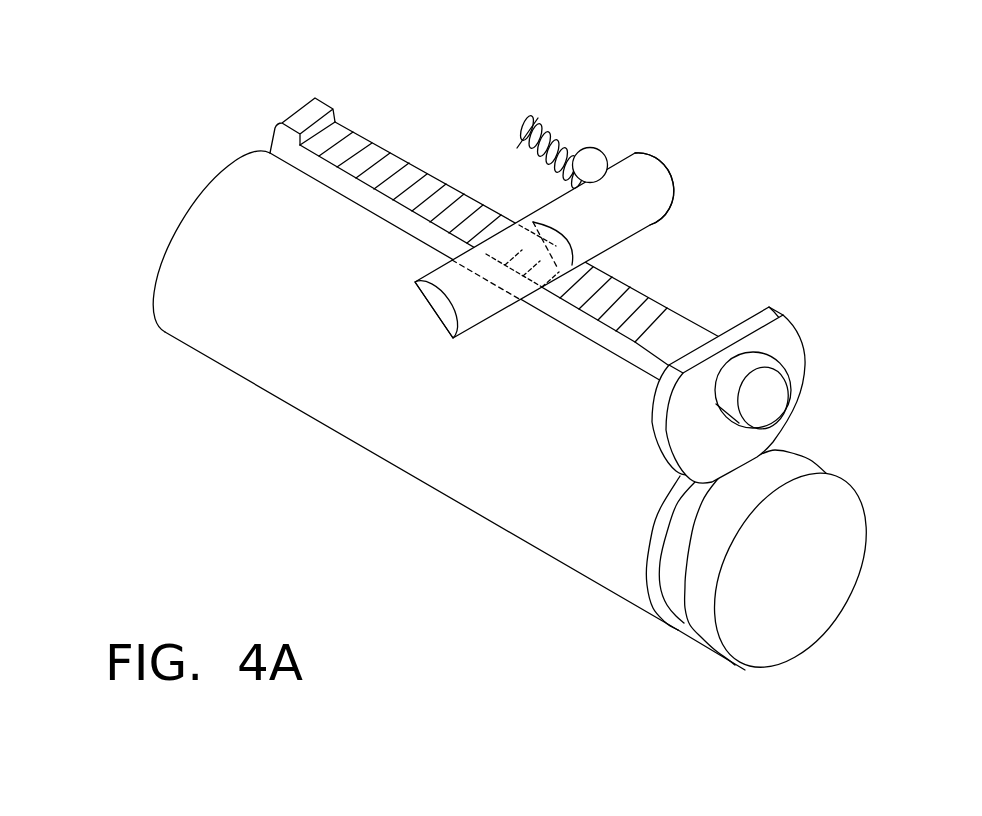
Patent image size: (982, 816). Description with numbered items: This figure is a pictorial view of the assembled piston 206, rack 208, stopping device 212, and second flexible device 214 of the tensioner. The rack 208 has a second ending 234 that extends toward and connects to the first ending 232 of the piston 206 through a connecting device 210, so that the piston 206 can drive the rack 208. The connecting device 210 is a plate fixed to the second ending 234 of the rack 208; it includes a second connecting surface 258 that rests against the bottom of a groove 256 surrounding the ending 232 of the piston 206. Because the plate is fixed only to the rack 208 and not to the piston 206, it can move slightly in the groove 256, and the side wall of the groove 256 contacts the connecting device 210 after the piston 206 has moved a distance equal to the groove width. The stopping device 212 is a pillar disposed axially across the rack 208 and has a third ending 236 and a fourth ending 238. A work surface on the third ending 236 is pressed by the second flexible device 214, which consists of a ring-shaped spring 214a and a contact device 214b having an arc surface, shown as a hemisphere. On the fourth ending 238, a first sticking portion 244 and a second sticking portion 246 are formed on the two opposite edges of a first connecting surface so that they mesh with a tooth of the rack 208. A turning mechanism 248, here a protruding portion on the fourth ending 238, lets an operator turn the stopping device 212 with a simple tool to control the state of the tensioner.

The piston 206 is at (523, 541).
The rack 208 is at (687, 333).
The connecting device 210 is at (771, 394).
The stopping device 212 is at (405, 334).
The second flexible device 214 is at (546, 108).
The ring-shaped spring 214a is at (525, 137).
The contact device 214b is at (593, 150).
The first ending 232 is at (709, 640).
The second ending 234 is at (788, 389).
The third ending 236 is at (664, 163).
The fourth ending 238 is at (511, 204).
The first sticking portion 244 is at (523, 300).
The second sticking portion 246 is at (500, 242).
The turning mechanism 248 is at (437, 305).
The groove 256 is at (665, 661).
The second connecting surface 258 is at (730, 462).